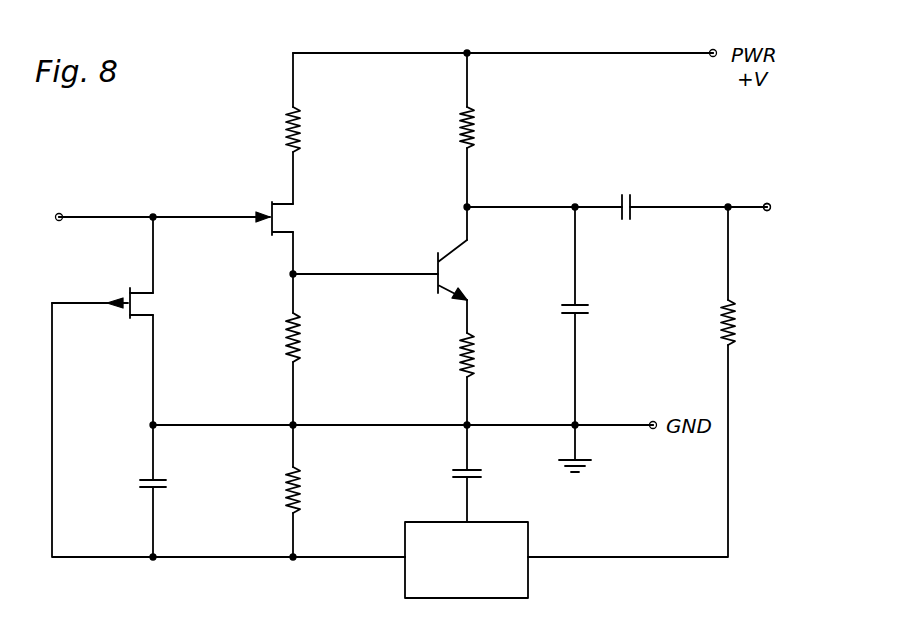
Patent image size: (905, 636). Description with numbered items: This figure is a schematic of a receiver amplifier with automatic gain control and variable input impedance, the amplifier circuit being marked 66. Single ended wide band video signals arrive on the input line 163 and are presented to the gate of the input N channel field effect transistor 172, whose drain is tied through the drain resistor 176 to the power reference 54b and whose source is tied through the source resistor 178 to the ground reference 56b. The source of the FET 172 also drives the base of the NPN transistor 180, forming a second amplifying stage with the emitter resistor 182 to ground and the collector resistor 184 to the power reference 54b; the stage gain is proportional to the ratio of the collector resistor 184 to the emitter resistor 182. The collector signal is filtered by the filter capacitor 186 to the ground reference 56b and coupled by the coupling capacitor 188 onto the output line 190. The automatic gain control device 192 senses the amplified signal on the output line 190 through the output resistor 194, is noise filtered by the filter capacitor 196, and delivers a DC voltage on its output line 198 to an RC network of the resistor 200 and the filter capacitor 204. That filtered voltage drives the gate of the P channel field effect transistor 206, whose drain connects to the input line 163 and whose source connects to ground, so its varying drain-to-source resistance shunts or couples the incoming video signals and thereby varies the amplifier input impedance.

The power reference 54b is at (560, 53).
The input line 163 is at (92, 216).
The drain resistor 176 is at (288, 126).
The amplifier circuit 66 is at (360, 171).
The input N channel field effect transistor 172 is at (297, 209).
The collector resistor 184 is at (471, 118).
The NPN transistor 180 is at (462, 253).
The coupling capacitor 188 is at (632, 197).
The output line 190 is at (703, 205).
The filter capacitor 186 is at (590, 304).
The output resistor 194 is at (724, 320).
The source resistor 178 is at (288, 336).
The emitter resistor 182 is at (459, 355).
The P channel field effect transistor 206 is at (136, 322).
The filter capacitor 204 is at (140, 484).
The resistor 200 is at (289, 488).
The filter capacitor 196 is at (454, 476).
The ground reference 56b is at (618, 427).
The automatic gain control device 192 is at (530, 577).
The output line 198 is at (336, 560).